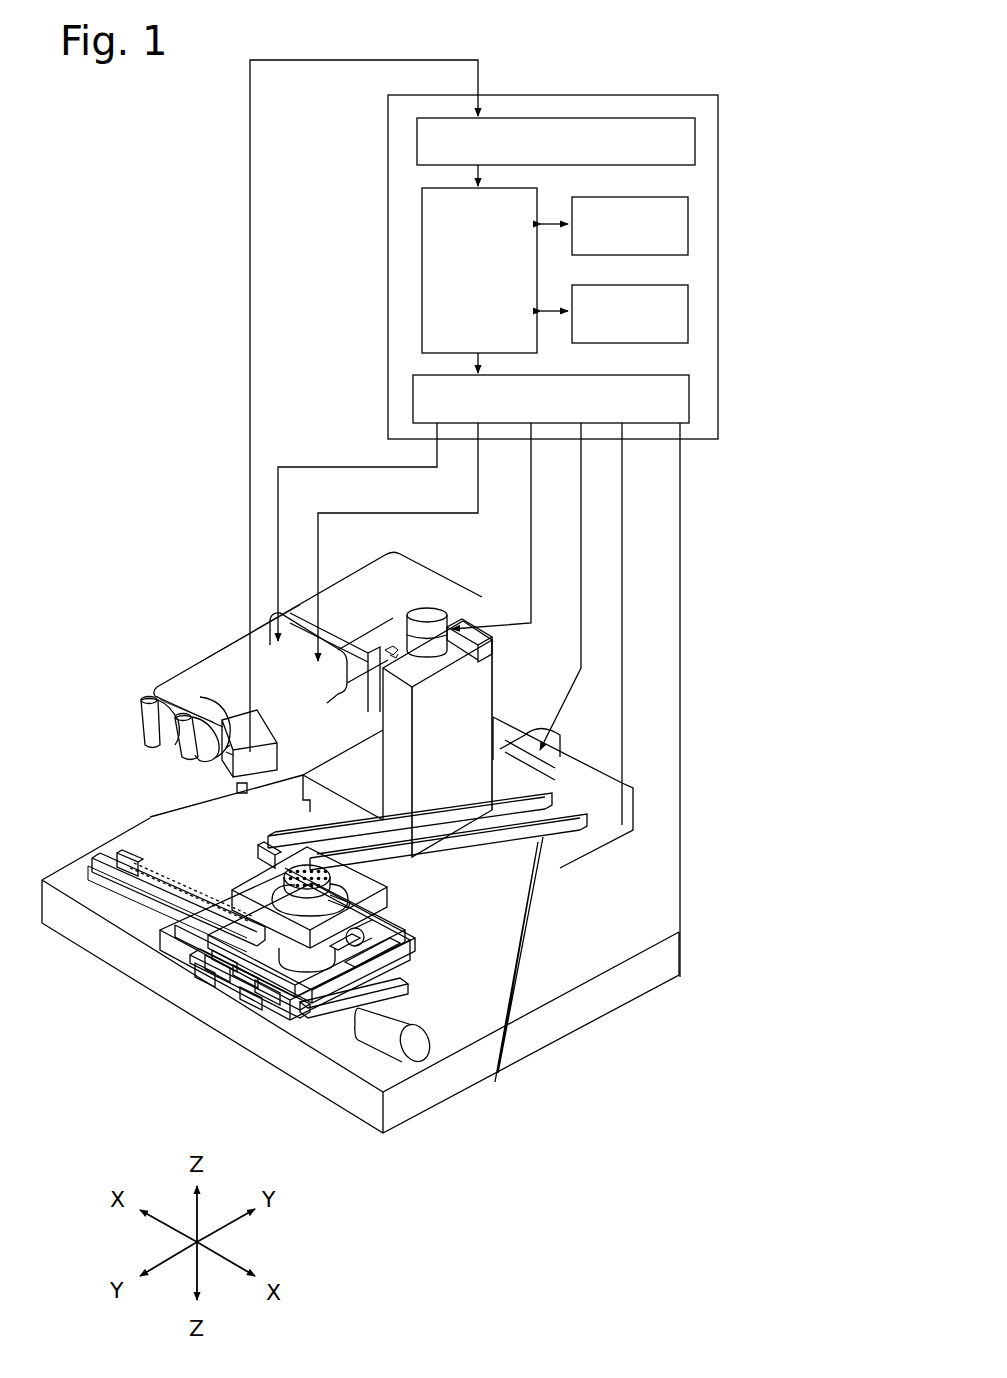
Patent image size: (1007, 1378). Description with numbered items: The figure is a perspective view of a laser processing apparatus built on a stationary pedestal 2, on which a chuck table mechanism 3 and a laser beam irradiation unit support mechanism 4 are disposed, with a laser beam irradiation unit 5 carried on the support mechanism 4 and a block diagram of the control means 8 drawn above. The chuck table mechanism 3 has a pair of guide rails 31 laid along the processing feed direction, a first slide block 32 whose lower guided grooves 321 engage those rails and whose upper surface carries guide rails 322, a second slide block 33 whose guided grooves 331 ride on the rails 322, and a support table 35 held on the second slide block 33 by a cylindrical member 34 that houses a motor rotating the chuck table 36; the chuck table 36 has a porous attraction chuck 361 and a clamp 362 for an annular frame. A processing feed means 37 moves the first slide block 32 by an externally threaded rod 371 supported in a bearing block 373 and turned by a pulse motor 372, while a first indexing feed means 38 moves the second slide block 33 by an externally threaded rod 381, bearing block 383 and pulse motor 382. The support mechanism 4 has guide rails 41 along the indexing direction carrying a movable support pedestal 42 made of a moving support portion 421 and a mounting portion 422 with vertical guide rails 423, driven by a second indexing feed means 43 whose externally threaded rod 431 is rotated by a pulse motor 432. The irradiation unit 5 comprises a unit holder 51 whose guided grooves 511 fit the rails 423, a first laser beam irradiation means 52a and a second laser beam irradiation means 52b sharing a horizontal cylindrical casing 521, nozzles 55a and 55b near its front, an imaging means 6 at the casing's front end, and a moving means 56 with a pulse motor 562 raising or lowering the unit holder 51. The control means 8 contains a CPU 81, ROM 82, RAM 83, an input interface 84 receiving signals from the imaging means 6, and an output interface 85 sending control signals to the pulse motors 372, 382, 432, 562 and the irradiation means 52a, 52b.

The stationary pedestal 2 is at (568, 965).
The chuck table mechanism 3 is at (472, 978).
The laser beam irradiation unit support mechanism 4 is at (637, 827).
The laser beam irradiation unit 5 is at (183, 597).
The imaging means 6 is at (245, 788).
The control means 8 is at (563, 62).
The guide rails 31 is at (120, 857).
The first slide block 32 is at (267, 990).
The second slide block 33 is at (390, 957).
The cylindrical member 34 is at (332, 948).
The support table 35 is at (367, 895).
The chuck table 36 is at (262, 885).
The processing feed means 37 is at (353, 1048).
The first indexing feed means 38 is at (395, 932).
The guide rails 41 is at (293, 830).
The movable support pedestal 42 is at (496, 702).
The second indexing feed means 43 is at (577, 753).
The unit holder 51 is at (375, 573).
The first laser beam irradiation means 52a is at (412, 735).
The second laser beam irradiation means 52b is at (180, 670).
The moving means 56 is at (418, 606).
The central processing unit 81 is at (422, 255).
The read-only memory 82 is at (688, 225).
The random access memory 83 is at (688, 312).
The input interface 84 is at (417, 140).
The output interface 85 is at (413, 400).
The guided grooves 321 is at (313, 970).
The guide rails 322 is at (207, 965).
The guided grooves 331 is at (237, 950).
The attraction chuck 361 is at (335, 868).
The clamp 362 is at (268, 853).
The externally threaded rod 371 is at (105, 935).
The pulse motor 372 is at (418, 1042).
The bearing block 373 is at (92, 853).
The externally threaded rod 381 is at (220, 963).
The pulse motor 382 is at (384, 920).
The bearing block 383 is at (240, 968).
The moving support portion 421 is at (323, 773).
The mounting portion 422 is at (494, 670).
The guide rails 423 is at (393, 655).
The externally threaded rod 431 is at (350, 827).
The pulse motor 432 is at (552, 758).
The guided grooves 511 is at (385, 652).
The cylindrical casing 521 is at (236, 650).
The first nozzle 55a is at (170, 748).
The second nozzle 55b is at (143, 730).
The pulse motor 562 is at (435, 613).